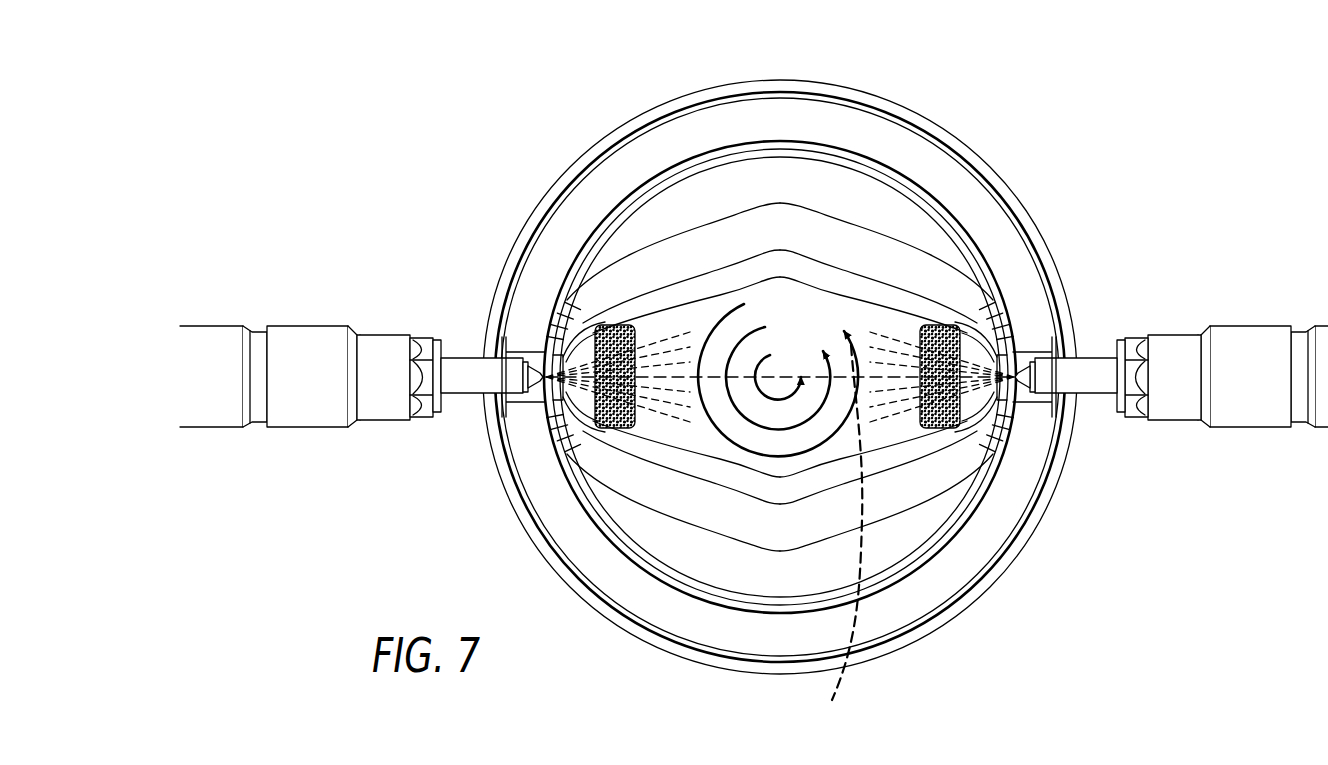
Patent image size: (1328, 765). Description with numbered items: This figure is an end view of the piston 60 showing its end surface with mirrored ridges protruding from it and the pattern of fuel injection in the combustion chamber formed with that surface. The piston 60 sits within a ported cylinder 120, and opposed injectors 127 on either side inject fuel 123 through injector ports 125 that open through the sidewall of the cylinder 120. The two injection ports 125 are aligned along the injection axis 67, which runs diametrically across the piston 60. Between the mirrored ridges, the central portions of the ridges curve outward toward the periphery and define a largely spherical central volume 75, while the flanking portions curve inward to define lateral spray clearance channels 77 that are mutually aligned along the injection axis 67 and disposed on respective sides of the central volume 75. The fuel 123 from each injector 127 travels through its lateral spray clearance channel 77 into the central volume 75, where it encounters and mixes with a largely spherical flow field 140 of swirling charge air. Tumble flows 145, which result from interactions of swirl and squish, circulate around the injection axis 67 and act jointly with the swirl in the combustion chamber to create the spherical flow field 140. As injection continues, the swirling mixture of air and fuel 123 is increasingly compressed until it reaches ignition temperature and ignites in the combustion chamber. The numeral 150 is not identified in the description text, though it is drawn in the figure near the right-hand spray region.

The piston 60 is at (630, 558).
The injection axis 67 is at (848, 697).
The central volume 75 is at (778, 288).
The lateral spray clearance channels 77 is at (648, 327).
The cylinder 120 is at (968, 612).
The fuel 123 is at (582, 362).
The injector port 125 is at (533, 399).
The injectors 127 is at (466, 395).
The spherical flow field 140 is at (858, 360).
The tumble flows 145 is at (615, 418).
The spray pattern 150 is at (985, 358).